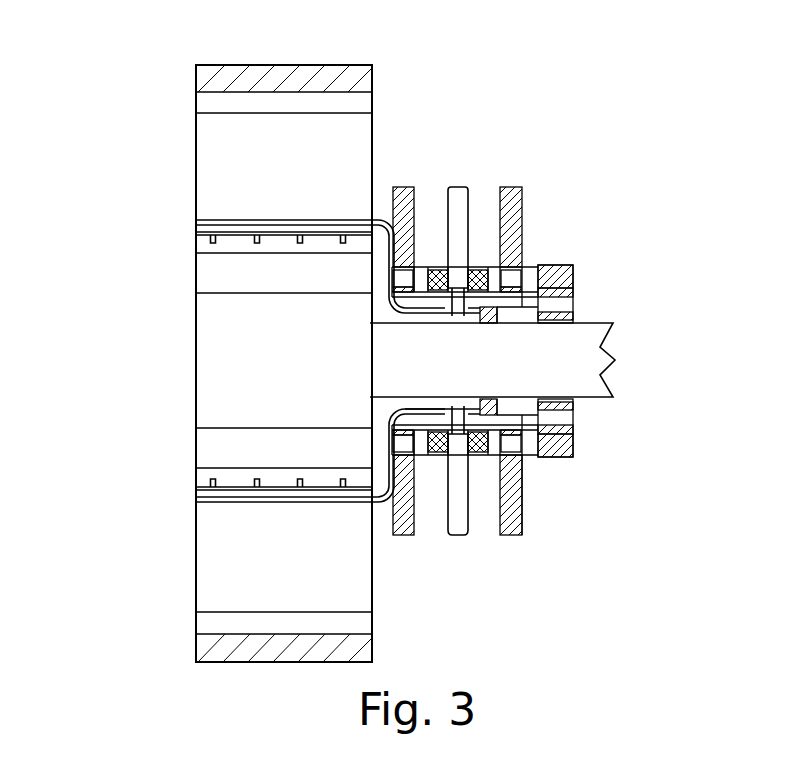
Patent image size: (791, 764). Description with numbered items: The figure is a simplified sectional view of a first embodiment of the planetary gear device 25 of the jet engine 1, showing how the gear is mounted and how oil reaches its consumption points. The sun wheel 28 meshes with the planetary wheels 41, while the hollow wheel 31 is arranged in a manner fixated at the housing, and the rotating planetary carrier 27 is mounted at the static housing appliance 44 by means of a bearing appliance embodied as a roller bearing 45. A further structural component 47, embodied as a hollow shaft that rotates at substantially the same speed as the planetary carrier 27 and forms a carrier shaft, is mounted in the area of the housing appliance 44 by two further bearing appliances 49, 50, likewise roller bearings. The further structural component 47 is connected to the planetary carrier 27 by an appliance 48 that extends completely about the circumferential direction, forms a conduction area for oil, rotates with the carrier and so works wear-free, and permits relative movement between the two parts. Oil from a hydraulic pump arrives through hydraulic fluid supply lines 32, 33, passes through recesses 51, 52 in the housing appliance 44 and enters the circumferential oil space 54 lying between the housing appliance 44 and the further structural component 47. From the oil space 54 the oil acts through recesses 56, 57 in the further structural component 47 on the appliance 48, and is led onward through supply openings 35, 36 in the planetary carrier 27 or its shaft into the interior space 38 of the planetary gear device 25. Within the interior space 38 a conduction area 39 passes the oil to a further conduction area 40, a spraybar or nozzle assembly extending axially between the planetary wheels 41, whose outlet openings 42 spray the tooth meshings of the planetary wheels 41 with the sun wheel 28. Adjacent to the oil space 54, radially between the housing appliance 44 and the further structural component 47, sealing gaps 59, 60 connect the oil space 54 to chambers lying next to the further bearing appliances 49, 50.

The jet engine 1 is at (145, 43).
The planetary gear device 25 is at (150, 152).
The hollow wheel 31 is at (307, 73).
The planetary wheels 41 is at (205, 130).
The sun wheel 28 is at (212, 336).
The further conduction area 40 is at (217, 227).
The outlet openings 42 is at (343, 244).
The supply opening 35 is at (462, 312).
The appliance 48 is at (500, 293).
The further bearing appliance 50 is at (503, 277).
The roller bearing 45 is at (573, 293).
The recess 56 is at (460, 290).
The conduction area 39 is at (420, 278).
The further bearing appliance 49 is at (410, 282).
The gap 59 is at (432, 316).
The gap 60 is at (505, 262).
The housing appliance 44 is at (522, 220).
The hydraulic fluid supply line 32 is at (466, 218).
The recess 51 is at (462, 240).
The planetary carrier 27 is at (490, 412).
The further structural component 47 is at (537, 438).
The interior space 38 is at (410, 412).
The recess 57 is at (517, 498).
The oil space 54 is at (510, 513).
The supply opening 36 is at (444, 430).
The hydraulic fluid supply line 33 is at (466, 535).
The recess 52 is at (478, 445).